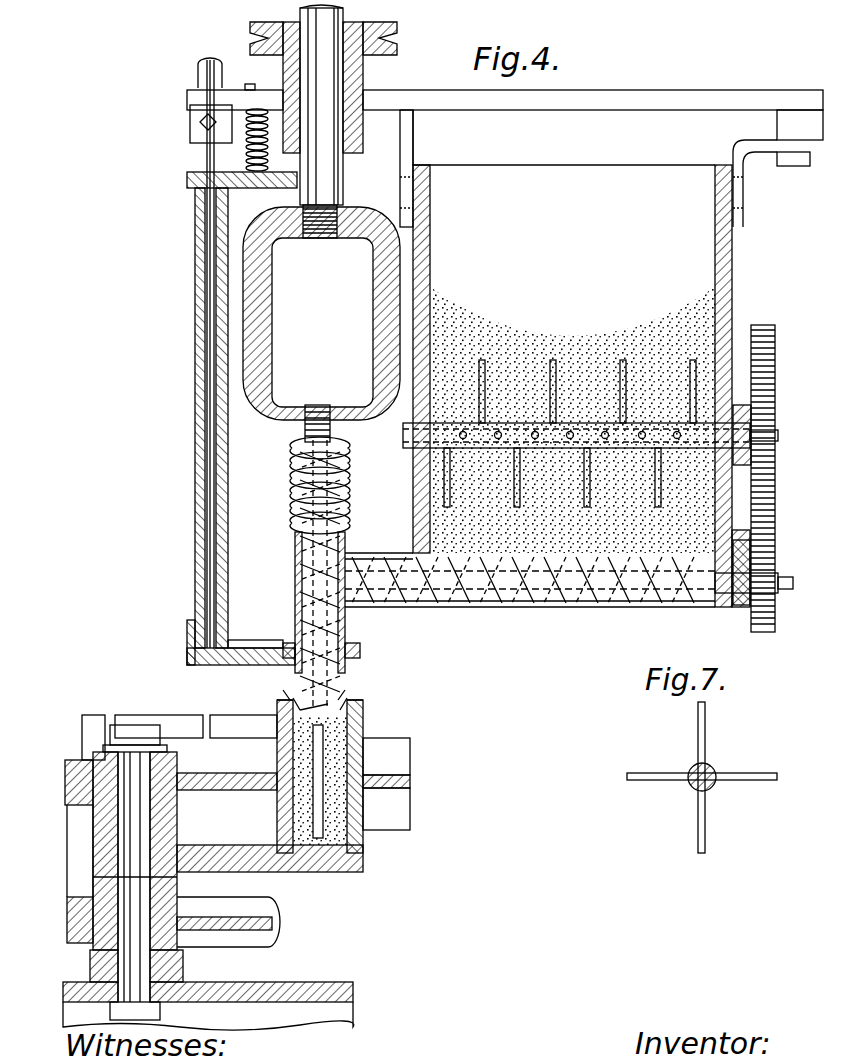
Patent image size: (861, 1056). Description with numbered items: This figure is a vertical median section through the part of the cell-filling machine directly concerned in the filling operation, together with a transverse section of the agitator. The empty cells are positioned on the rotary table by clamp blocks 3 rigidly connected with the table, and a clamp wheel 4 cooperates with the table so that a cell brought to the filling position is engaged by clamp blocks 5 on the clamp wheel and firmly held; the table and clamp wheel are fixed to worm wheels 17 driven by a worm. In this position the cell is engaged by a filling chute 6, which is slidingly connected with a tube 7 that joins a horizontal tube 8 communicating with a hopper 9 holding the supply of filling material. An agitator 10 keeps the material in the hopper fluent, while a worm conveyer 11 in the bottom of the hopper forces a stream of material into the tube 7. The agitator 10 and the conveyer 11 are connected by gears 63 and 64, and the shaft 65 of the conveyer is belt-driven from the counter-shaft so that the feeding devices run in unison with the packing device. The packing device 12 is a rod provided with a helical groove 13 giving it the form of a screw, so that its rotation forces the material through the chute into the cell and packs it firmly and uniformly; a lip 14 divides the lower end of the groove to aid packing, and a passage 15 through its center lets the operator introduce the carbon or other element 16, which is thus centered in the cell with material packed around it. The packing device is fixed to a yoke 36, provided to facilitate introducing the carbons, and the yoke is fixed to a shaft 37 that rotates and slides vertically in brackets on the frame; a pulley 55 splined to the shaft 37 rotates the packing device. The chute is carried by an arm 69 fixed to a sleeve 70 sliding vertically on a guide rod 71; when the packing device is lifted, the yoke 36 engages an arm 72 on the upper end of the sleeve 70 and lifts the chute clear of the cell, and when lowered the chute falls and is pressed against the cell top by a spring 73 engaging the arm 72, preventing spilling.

In FIG. 4, the clamp blocks 3 is at (175, 730).
In FIG. 4, the clamp wheel 4 is at (363, 840).
In FIG. 4, the clamp blocks 5 is at (385, 790).
In FIG. 4, the filling chute 6 is at (350, 688).
In FIG. 4, the tube 7 is at (347, 628).
In FIG. 4, the horizontal tube 8 is at (362, 554).
In FIG. 4, the hopper 9 is at (690, 272).
In FIG. 4, the agitator 10 is at (510, 428).
In FIG. 7, the agitator 10 is at (712, 768).
In FIG. 4, the worm conveyer 11 is at (566, 592).
In FIG. 4, the packing device 12 is at (305, 515).
In FIG. 4, the helical groove 13 is at (305, 488).
In FIG. 4, the lip 14 is at (290, 704).
In FIG. 4, the passage 15 is at (325, 415).
In FIG. 4, the element 16 is at (320, 760).
In FIG. 4, the worm wheels 17 is at (270, 922).
In FIG. 4, the yoke 36 is at (275, 348).
In FIG. 4, the shaft 37 is at (340, 22).
In FIG. 4, the pulley 55 is at (372, 36).
In FIG. 4, the gear 63 is at (776, 392).
In FIG. 4, the gear 64 is at (776, 556).
In FIG. 4, the conveyer shaft 65 is at (790, 586).
In FIG. 4, the arm 69 is at (262, 650).
In FIG. 4, the sleeve 70 is at (197, 478).
In FIG. 4, the guide rod 71 is at (207, 352).
In FIG. 4, the arm 72 is at (252, 186).
In FIG. 4, the spring 73 is at (232, 138).